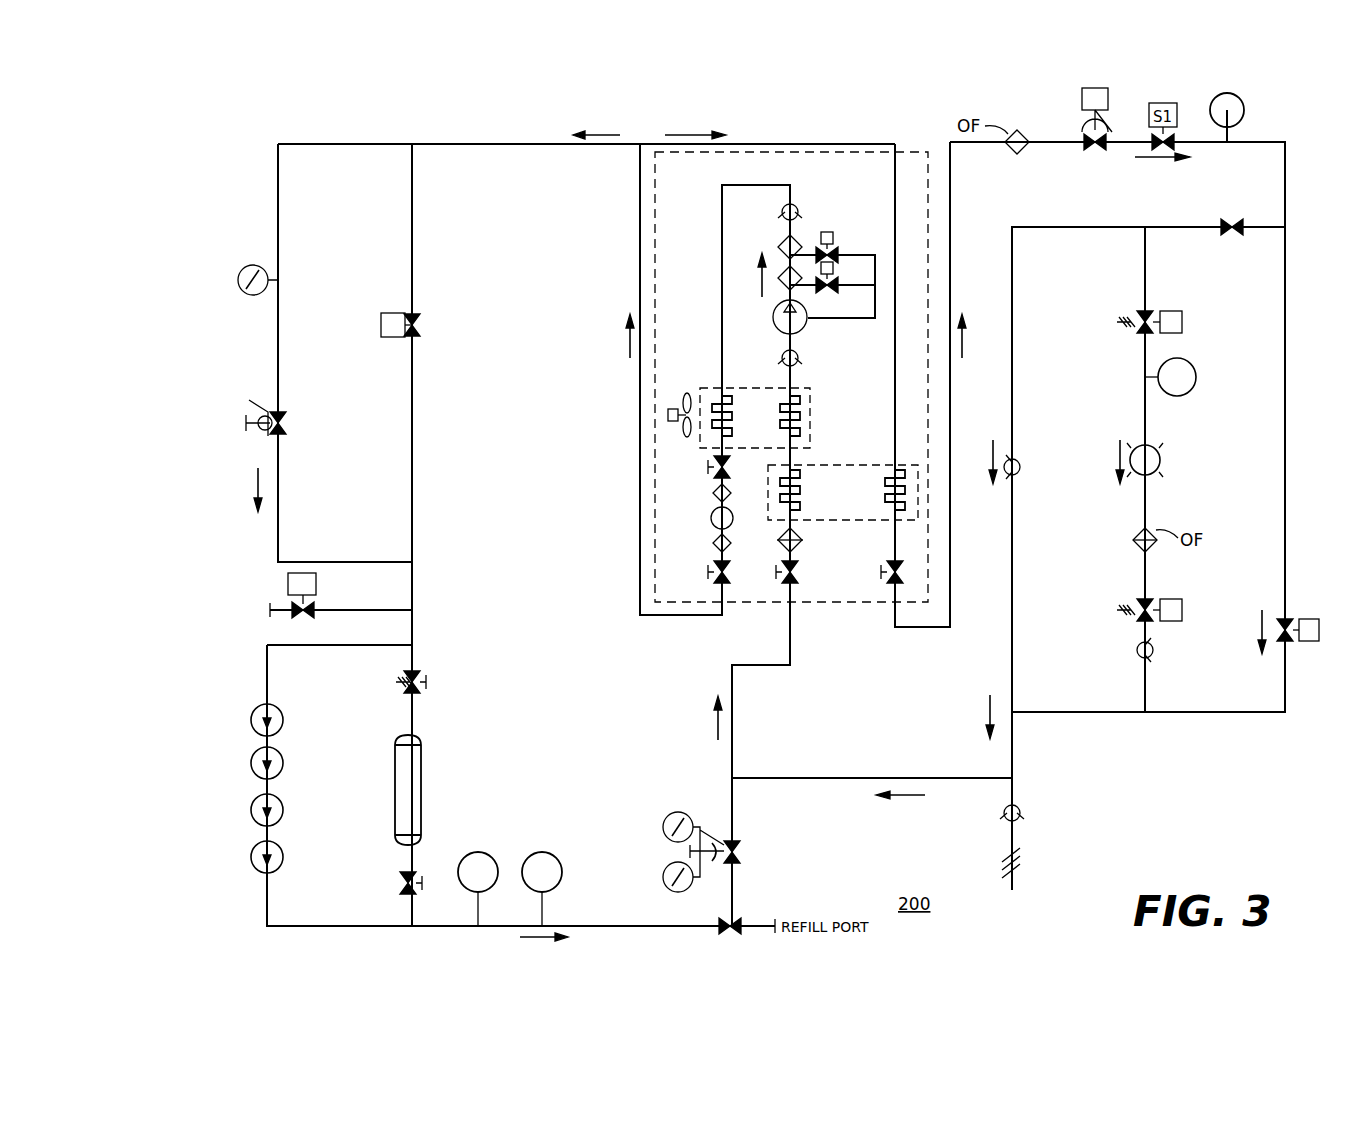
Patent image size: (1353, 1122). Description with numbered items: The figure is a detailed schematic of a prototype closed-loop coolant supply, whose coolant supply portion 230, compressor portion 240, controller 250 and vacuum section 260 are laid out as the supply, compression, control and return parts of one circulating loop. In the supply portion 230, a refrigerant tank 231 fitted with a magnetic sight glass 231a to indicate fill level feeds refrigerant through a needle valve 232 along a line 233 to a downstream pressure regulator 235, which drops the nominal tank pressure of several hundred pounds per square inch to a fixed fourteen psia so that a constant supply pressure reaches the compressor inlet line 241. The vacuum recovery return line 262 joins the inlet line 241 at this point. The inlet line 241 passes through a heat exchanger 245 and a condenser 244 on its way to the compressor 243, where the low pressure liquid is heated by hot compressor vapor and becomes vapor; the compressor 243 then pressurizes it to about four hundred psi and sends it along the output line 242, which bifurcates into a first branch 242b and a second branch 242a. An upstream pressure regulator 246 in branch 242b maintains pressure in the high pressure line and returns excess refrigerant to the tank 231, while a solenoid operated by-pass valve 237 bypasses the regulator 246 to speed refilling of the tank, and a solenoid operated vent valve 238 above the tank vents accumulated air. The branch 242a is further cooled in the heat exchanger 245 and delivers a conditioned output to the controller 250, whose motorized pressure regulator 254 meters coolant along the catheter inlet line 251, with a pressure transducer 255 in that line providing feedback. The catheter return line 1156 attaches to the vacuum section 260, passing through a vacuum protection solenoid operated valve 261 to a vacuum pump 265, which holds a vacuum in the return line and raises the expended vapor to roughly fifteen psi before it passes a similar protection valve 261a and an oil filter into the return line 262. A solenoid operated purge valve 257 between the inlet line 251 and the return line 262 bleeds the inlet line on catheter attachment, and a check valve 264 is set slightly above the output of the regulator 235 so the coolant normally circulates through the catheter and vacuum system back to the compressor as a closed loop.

The coolant supply portion 230 is at (478, 795).
The refrigerant tank 231 is at (396, 770).
The magnetic sight glass 231a is at (228, 790).
The needle valve 232 is at (400, 886).
The line 233 is at (585, 928).
The pressure regulator 235 is at (740, 856).
The solenoid operated by-pass valve 237 is at (420, 327).
The solenoid operated vent valve 238 is at (292, 602).
The compressor portion 240 is at (791, 377).
The compressor inlet line 241 is at (790, 628).
The compressor output line 242 is at (672, 618).
The second branch of output line 242a is at (950, 545).
The first branch of output line 242b is at (358, 144).
The compressor 243 is at (878, 285).
The condenser 244 is at (748, 388).
The heat exchanger 245 is at (835, 448).
The upstream pressure regulator 246 is at (282, 423).
The controller 250 is at (1092, 158).
The catheter inlet line 251 is at (1290, 225).
The motorized pressure regulator 254 is at (1110, 110).
The pressure transducer 255 is at (1244, 108).
The solenoid operated purge valve 257 is at (1278, 615).
The vacuum section 260 is at (1120, 220).
The vacuum protection solenoid operated valve 261 is at (1140, 312).
The solenoid operated protection valve 261a is at (1140, 600).
The return line 262 is at (960, 776).
The check valve 264 is at (1022, 462).
The vacuum pump 265 is at (1140, 440).
The catheter connection line 1156 is at (1170, 225).